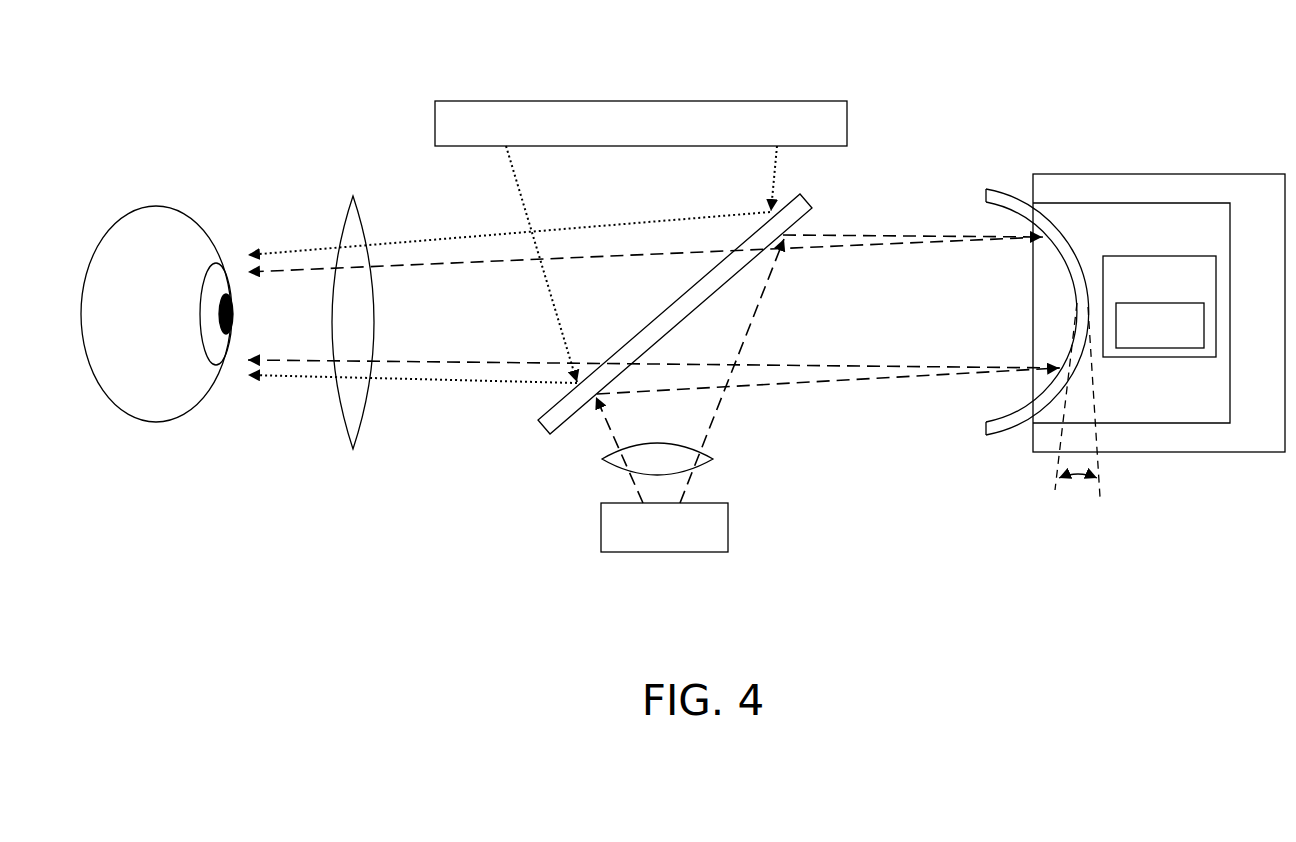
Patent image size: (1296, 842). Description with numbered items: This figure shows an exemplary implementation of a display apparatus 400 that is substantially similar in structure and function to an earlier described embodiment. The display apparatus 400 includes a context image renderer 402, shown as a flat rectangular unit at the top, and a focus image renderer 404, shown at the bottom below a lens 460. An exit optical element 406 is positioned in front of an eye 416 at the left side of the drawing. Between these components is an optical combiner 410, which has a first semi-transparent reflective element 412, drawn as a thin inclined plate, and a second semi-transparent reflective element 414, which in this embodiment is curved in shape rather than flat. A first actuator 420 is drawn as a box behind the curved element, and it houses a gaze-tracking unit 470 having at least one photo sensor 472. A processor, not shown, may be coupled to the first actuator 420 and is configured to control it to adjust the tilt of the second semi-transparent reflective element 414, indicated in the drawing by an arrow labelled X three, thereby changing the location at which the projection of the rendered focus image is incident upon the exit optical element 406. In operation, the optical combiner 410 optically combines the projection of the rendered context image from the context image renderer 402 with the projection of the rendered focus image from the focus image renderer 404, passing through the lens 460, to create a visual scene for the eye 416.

The display apparatus 400 is at (1138, 48).
The context image renderer 402 is at (612, 100).
The focus image renderer 404 is at (652, 553).
The exit optical element 406 is at (340, 221).
The optical combiner 410 is at (729, 290).
The first semi-transparent reflective element 412 is at (653, 320).
The second semi-transparent reflective element 414 is at (1010, 431).
The eye 416 is at (198, 408).
The first actuator 420 is at (1159, 277).
The lens 460 is at (707, 452).
The gaze-tracking unit 470 is at (1159, 306).
The photo sensor 472 is at (1160, 325).